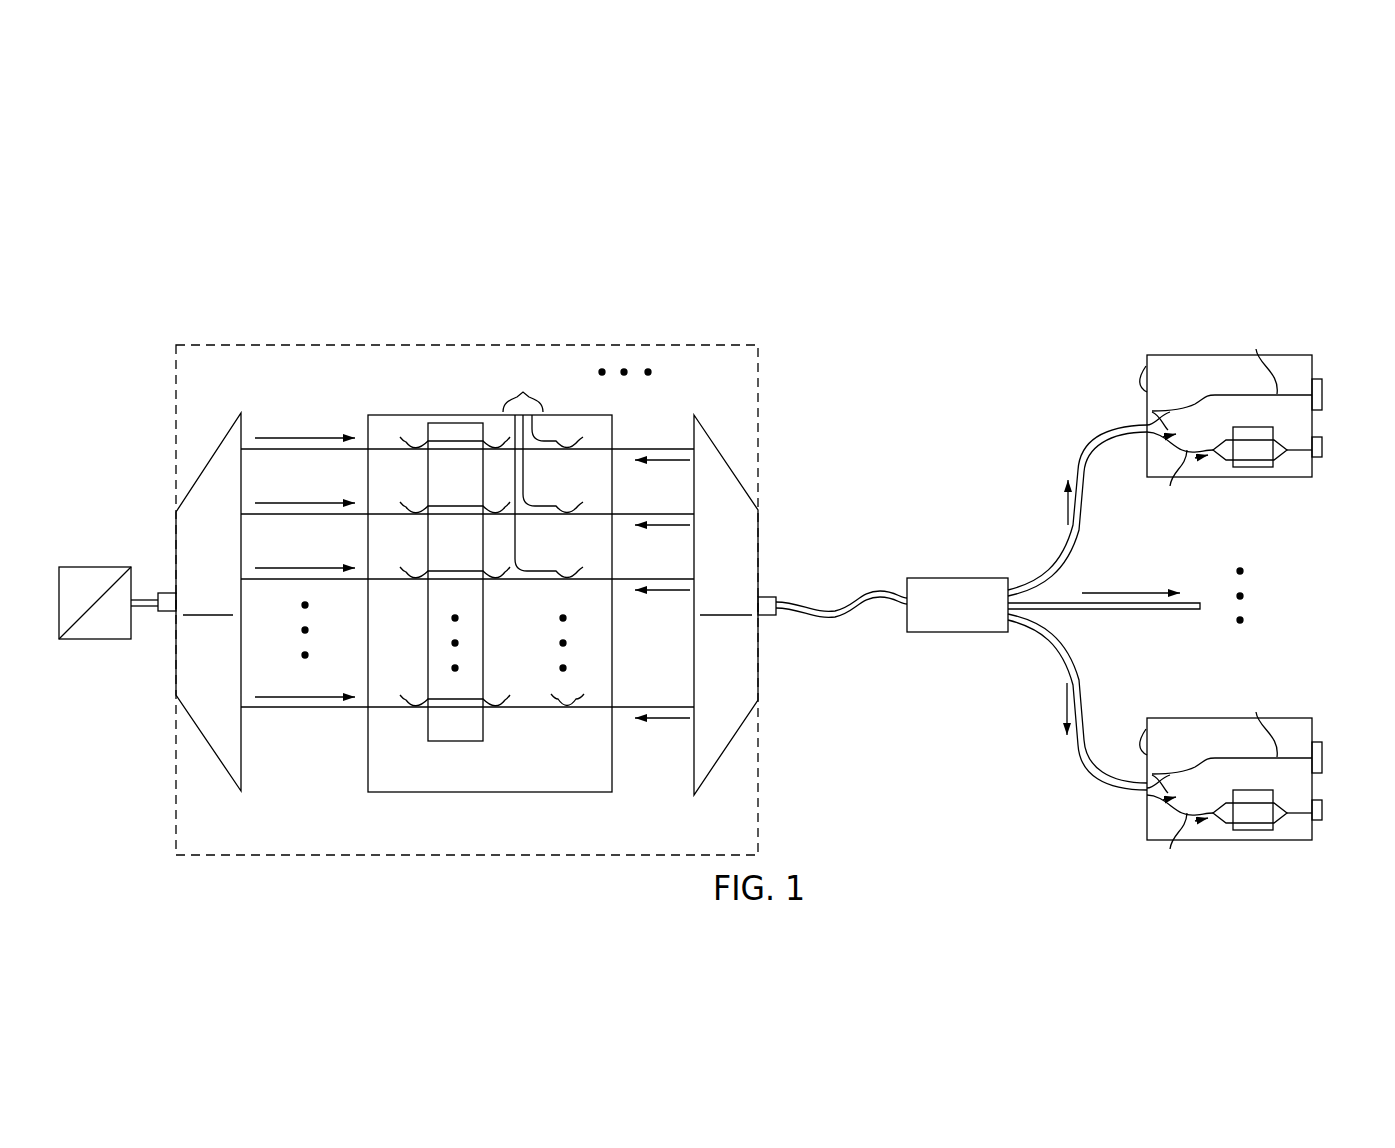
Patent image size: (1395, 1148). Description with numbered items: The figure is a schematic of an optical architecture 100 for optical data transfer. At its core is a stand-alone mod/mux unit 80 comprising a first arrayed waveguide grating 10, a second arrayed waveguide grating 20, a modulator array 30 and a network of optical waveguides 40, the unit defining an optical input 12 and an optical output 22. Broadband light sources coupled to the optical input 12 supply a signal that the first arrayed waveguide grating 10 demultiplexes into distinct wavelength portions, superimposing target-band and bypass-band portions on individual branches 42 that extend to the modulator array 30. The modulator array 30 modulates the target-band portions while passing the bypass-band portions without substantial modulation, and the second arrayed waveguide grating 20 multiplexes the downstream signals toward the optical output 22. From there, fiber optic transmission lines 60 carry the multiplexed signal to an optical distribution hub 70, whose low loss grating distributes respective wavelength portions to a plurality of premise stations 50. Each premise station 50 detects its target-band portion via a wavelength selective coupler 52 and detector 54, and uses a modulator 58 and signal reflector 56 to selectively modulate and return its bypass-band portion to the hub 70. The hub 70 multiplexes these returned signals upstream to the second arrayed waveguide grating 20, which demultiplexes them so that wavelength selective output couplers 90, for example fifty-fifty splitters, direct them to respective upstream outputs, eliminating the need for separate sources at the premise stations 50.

The optical architecture 100 is at (162, 318).
The first arrayed waveguide grating 10 is at (205, 745).
The optical input 12 is at (166, 612).
The second arrayed waveguide grating 20 is at (724, 757).
The optical output 22 is at (768, 616).
The modulator array 30 is at (485, 795).
The optical waveguides 40 is at (313, 735).
The individual branches 42 is at (386, 451).
The premise station 50 is at (1180, 355).
The wavelength selective coupler 52 is at (1160, 406).
The detector 54 is at (1325, 395).
The signal reflector 56 is at (1325, 445).
The modulator 58 is at (1262, 470).
The fiber optic transmission lines 60 is at (845, 598).
The optical distribution hub 70 is at (933, 633).
The mod/mux unit 80 is at (695, 345).
The wavelength selective output couplers 90 is at (568, 433).